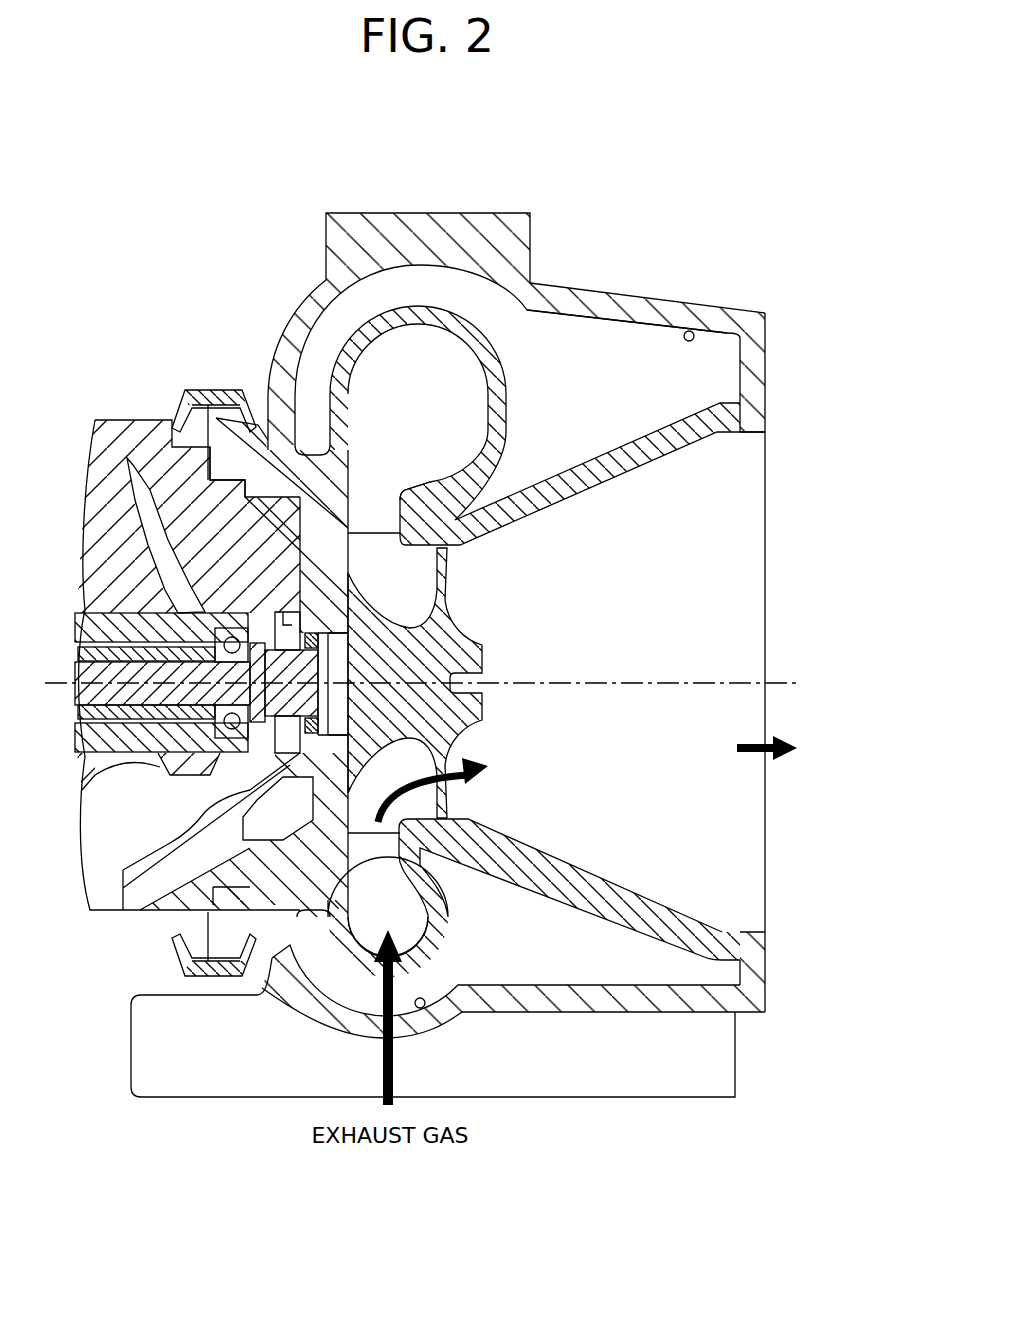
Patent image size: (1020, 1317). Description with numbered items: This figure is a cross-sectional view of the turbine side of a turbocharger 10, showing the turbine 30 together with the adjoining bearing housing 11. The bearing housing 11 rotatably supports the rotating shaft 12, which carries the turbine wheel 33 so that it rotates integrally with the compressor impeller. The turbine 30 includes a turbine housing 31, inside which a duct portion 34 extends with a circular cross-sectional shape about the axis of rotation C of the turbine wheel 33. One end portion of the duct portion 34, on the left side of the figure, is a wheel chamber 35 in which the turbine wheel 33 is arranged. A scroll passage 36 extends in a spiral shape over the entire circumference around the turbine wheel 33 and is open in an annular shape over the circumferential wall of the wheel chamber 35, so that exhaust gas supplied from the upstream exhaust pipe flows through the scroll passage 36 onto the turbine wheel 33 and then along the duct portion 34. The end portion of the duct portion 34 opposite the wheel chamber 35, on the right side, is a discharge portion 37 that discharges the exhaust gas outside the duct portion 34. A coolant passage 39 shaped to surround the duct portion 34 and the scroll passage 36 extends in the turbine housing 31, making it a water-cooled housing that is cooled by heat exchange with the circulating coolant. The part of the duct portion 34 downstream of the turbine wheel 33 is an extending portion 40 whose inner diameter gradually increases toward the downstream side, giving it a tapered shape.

The turbocharger 10 is at (473, 165).
The bearing housing 11 is at (132, 420).
The rotating shaft 12 is at (90, 661).
The turbine 30 is at (629, 230).
The turbine housing 31 is at (620, 294).
The turbine wheel 33 is at (380, 535).
The duct portion 34 is at (526, 737).
The wheel chamber 35 is at (428, 521).
The scroll passage 36 is at (402, 412).
The discharge portion 37 is at (741, 434).
The coolant passage 39 is at (689, 331).
The extending portion 40 is at (566, 500).
The axis of rotation C is at (790, 672).